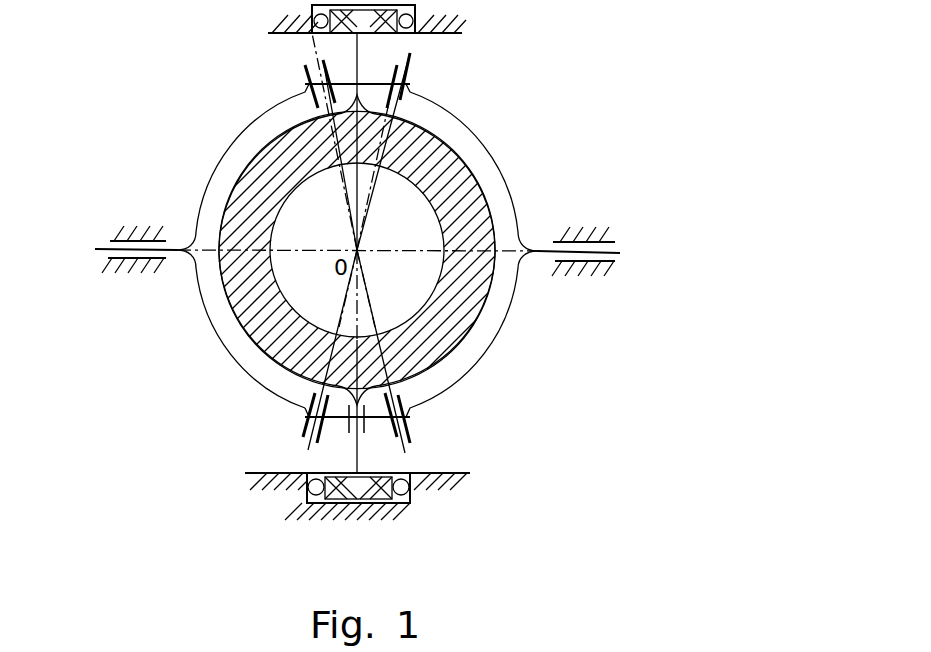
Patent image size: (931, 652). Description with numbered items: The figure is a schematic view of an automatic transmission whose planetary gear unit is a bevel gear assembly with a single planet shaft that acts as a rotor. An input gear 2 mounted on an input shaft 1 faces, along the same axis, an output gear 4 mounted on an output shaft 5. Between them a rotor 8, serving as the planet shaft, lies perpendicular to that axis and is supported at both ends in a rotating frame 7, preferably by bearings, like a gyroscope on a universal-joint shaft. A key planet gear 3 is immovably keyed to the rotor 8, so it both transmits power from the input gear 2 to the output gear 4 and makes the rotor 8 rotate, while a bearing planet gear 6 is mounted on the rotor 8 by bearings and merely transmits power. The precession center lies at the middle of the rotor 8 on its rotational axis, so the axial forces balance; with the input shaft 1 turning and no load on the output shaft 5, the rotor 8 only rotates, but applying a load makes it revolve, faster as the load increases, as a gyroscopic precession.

The input shaft 1 is at (107, 248).
The input gear 2 is at (197, 197).
The key planet gear 3 is at (322, 88).
The output gear 4 is at (468, 123).
The output shaft 5 is at (618, 253).
The bearing planet gear 6 is at (405, 405).
The rotating frame 7 is at (412, 498).
The rotor 8 is at (267, 317).